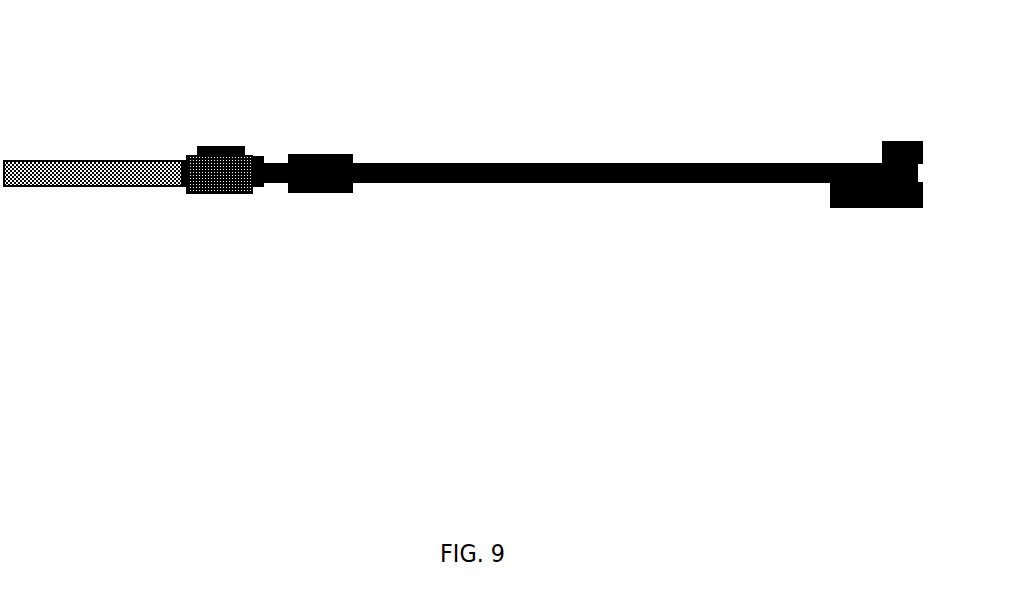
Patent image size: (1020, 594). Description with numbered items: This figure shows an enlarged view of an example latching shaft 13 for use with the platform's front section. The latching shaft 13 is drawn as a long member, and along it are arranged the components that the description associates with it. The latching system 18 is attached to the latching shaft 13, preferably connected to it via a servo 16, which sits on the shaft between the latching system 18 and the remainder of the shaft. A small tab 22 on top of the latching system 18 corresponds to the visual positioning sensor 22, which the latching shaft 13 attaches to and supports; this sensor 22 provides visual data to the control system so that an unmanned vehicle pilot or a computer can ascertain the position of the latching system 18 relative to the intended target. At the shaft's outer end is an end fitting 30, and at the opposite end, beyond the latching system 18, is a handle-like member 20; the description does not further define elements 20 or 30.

The latching shaft 13 is at (645, 163).
The servo 16 is at (335, 155).
The latching system 18 is at (217, 193).
The handle 20 is at (78, 161).
The visual positioning sensor 22 is at (213, 146).
The end fitting 30 is at (890, 141).